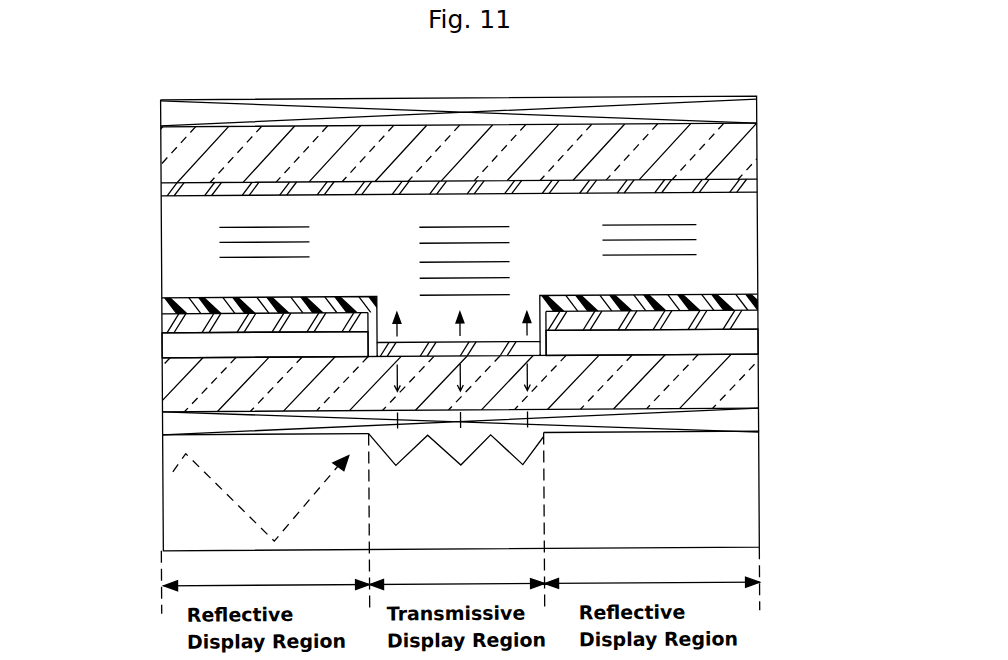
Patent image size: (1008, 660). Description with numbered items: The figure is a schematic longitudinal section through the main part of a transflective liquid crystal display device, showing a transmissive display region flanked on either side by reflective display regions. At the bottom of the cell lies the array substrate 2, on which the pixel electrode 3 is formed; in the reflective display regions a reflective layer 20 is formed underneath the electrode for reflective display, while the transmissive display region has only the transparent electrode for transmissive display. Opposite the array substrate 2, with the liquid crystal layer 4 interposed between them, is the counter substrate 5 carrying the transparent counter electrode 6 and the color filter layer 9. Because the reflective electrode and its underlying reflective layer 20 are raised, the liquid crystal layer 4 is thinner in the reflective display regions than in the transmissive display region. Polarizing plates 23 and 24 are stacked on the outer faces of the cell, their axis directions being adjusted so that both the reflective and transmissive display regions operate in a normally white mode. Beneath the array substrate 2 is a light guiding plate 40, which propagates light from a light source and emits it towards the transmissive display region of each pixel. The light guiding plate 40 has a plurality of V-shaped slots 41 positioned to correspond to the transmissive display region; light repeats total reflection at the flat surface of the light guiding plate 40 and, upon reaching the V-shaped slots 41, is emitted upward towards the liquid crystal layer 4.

The array substrate 2 is at (435, 374).
The pixel electrode 3 is at (758, 272).
The liquid crystal layer 4 is at (455, 283).
The counter substrate 5 is at (424, 177).
The counter electrode 6 is at (758, 190).
The color filter layer 9 is at (163, 298).
The reflective layer 20 is at (163, 337).
The polarizing plate 23 is at (758, 413).
The polarizing plate 24 is at (756, 108).
The light guiding plate 40 is at (411, 491).
The V-shaped slots 41 is at (545, 440).